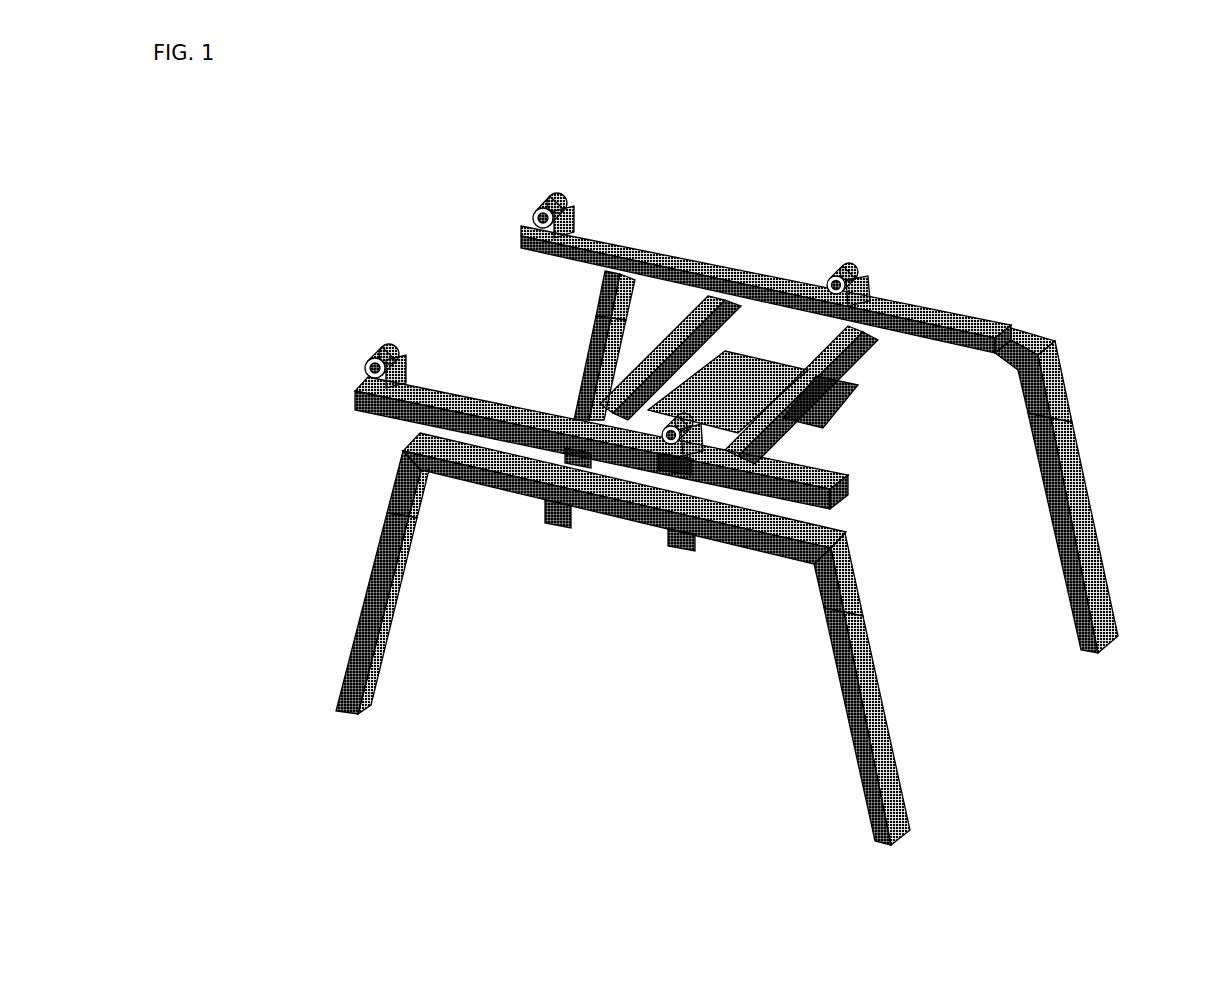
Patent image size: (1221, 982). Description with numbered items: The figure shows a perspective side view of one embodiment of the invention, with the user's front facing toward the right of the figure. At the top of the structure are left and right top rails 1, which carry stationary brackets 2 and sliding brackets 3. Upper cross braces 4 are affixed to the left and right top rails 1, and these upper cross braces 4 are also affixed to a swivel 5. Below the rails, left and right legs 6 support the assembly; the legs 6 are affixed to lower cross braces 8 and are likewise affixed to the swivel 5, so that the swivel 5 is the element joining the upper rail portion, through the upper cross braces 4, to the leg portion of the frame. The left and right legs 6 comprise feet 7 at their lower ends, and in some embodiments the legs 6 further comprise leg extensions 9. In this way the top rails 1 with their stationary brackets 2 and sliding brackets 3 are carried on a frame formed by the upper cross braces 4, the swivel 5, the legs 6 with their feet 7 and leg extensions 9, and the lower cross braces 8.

The top rails 1 is at (712, 258).
The stationary brackets 2 is at (552, 183).
The sliding brackets 3 is at (845, 262).
The upper cross braces 4 is at (663, 340).
The swivel 5 is at (767, 353).
The legs 6 is at (1027, 335).
The feet 7 is at (1053, 362).
The lower cross braces 8 is at (830, 408).
The leg extensions 9 is at (1078, 502).